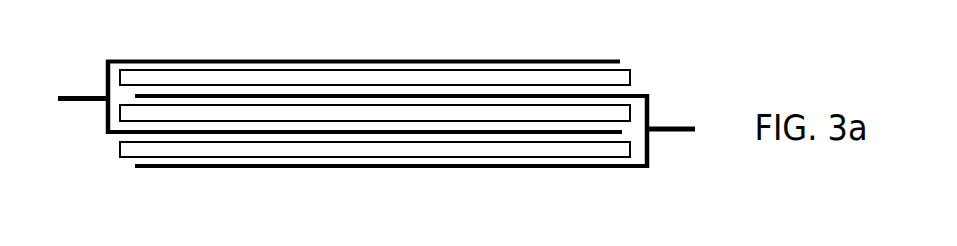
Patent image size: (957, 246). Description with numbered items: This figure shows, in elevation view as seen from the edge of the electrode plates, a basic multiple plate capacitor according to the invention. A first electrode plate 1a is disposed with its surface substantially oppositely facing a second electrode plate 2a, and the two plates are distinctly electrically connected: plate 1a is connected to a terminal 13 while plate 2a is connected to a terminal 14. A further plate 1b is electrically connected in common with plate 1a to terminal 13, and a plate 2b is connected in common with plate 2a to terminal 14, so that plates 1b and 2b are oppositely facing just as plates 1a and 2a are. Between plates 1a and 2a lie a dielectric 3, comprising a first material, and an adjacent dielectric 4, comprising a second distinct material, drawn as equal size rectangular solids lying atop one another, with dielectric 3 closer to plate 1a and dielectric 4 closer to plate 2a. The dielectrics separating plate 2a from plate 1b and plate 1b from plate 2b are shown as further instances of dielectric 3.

The terminal 13 is at (82, 96).
The terminal 14 is at (677, 127).
The first electrode plate 1a is at (522, 61).
The electrode plate 1b is at (485, 134).
The second electrode plate 2a is at (557, 95).
The electrode plate 2b is at (573, 166).
The dielectric 3 is at (237, 75).
The dielectric 4 is at (265, 82).